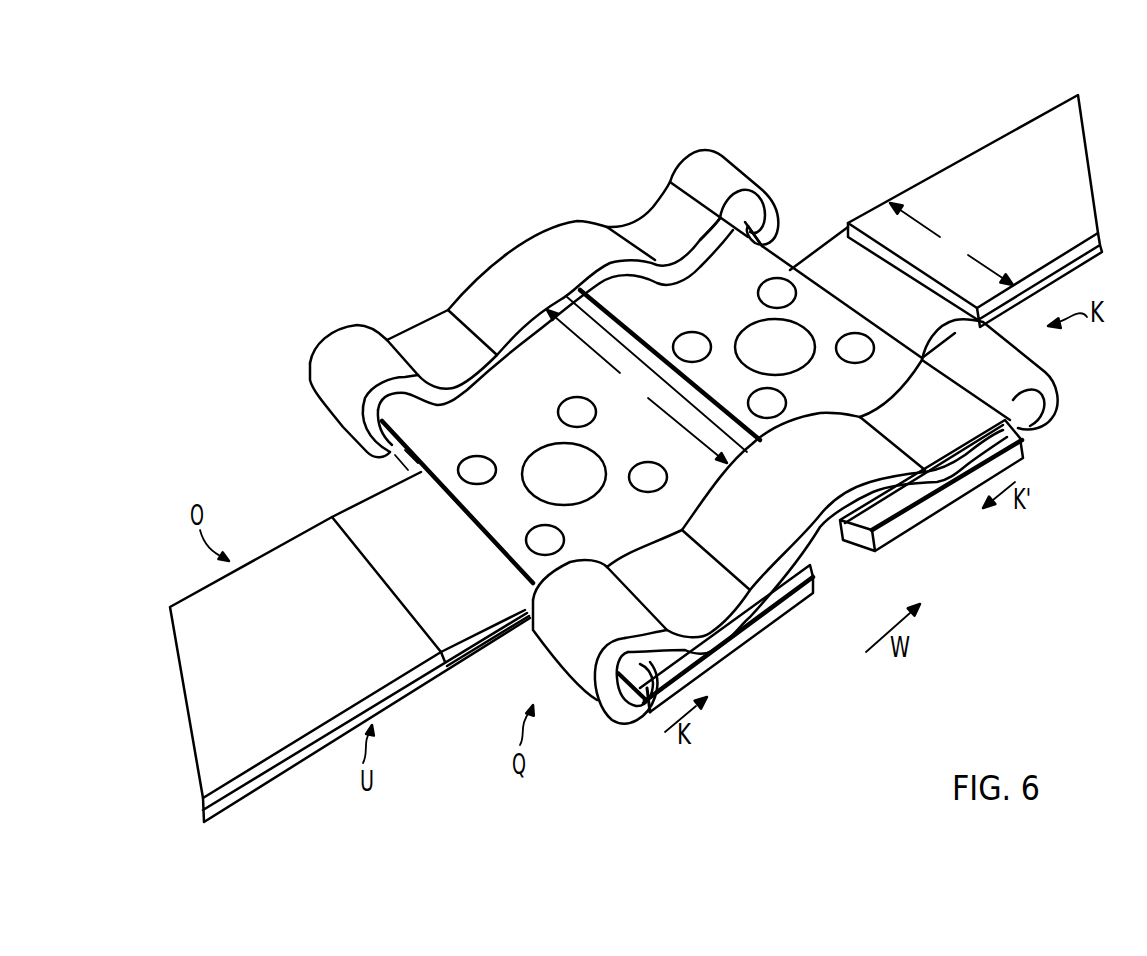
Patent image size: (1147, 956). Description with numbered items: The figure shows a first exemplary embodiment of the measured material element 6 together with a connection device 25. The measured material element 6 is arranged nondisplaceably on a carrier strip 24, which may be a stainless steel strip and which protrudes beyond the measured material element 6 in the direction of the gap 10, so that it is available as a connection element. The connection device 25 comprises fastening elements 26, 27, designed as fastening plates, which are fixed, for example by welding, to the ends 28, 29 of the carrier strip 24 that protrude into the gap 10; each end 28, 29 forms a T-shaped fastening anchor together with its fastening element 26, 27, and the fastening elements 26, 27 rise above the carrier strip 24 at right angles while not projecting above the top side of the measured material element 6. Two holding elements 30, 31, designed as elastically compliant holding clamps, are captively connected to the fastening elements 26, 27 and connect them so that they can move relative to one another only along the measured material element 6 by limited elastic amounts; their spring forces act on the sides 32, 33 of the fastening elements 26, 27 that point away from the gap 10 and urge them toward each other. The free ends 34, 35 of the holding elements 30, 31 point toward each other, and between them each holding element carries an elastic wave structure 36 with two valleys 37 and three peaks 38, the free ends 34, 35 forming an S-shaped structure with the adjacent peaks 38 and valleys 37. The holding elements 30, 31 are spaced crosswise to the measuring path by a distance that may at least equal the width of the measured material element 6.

The measured material element 6 is at (998, 118).
The gap 10 is at (366, 236).
The carrier strip 24 is at (481, 662).
The connection device 25 is at (501, 158).
The fastening element 26 is at (358, 429).
The fastening element 27 is at (768, 210).
The end of the carrier strip 28 is at (372, 517).
The end of the carrier strip 29 is at (826, 242).
The holding element 30 is at (508, 250).
The holding element 31 is at (824, 540).
The side of fastening element 32 is at (407, 465).
The side of fastening element 33 is at (787, 252).
The free end of holding element 34 is at (632, 722).
The free end of holding element 35 is at (1047, 425).
The wave structure 36 is at (464, 255).
The valley 37 is at (428, 368).
The peak 38 is at (337, 383).